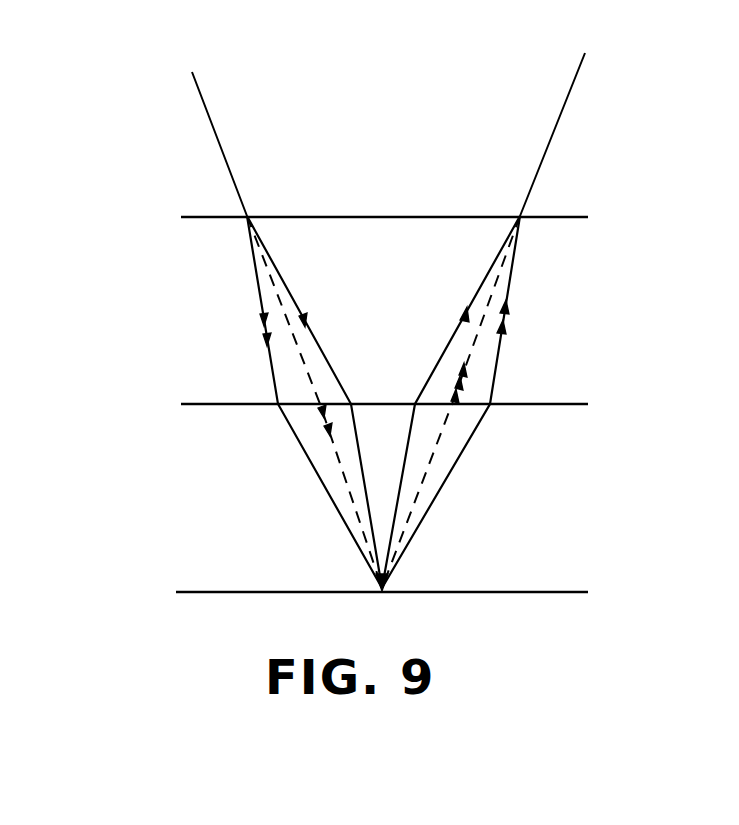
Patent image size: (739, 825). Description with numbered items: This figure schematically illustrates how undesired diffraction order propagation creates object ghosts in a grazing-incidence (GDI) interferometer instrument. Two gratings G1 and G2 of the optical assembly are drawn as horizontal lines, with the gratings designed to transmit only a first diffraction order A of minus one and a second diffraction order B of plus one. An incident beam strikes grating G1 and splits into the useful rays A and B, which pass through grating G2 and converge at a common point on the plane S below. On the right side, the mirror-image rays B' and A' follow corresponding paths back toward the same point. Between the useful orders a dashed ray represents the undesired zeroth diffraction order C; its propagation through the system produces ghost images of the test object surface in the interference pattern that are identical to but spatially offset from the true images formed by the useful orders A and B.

The grating G1 is at (190, 218).
The grating G2 is at (190, 405).
The sample / screen plane S is at (186, 593).
The first diffraction order A is at (221, 402).
The second diffraction order B is at (242, 402).
The 0th diffraction order C is at (293, 348).
The diffracted beam B prime B' is at (451, 402).
The diffracted beam A prime A' is at (512, 402).